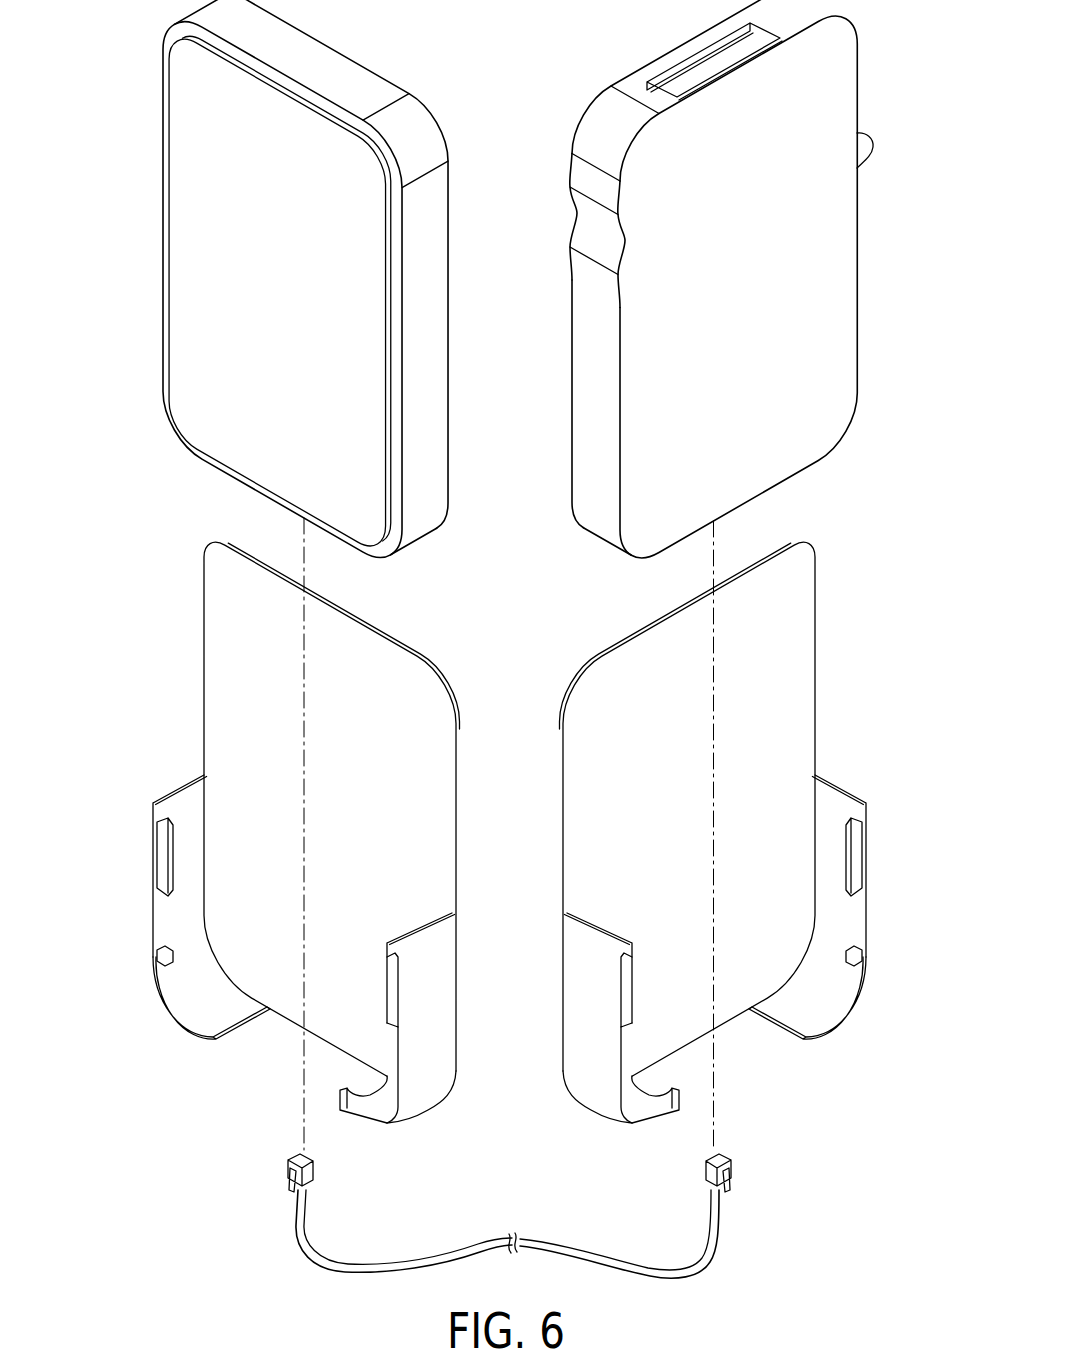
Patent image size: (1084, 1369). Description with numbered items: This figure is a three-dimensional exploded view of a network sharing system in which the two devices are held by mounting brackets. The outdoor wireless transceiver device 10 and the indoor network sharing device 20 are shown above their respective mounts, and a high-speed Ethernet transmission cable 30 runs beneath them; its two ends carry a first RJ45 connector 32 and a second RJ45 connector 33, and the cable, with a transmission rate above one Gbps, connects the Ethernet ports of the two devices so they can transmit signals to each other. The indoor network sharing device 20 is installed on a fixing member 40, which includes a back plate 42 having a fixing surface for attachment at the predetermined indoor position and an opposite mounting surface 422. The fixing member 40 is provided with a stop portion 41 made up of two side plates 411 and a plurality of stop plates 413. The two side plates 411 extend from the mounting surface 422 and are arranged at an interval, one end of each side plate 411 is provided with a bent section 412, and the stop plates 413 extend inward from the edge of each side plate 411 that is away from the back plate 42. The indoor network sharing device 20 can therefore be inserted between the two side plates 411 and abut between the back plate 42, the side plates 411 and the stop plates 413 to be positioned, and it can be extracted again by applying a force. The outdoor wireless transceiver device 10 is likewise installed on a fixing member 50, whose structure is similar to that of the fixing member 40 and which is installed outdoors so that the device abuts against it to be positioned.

The outdoor wireless transceiver device 10 is at (873, 157).
The indoor network sharing device 20 is at (190, 186).
The high-speed Ethernet transmission cable 30 is at (262, 1173).
The first RJ45 connector 32 is at (735, 1160).
The second RJ45 connector 33 is at (274, 1152).
The fixing member 40 is at (190, 562).
The stop portion 41 is at (145, 806).
The side plate 411 is at (190, 803).
The bent section 412 is at (207, 988).
The stop plate 413 is at (168, 860).
The back plate 42 is at (203, 648).
The mounting surface 422 is at (240, 697).
The fixing member 50 is at (834, 562).